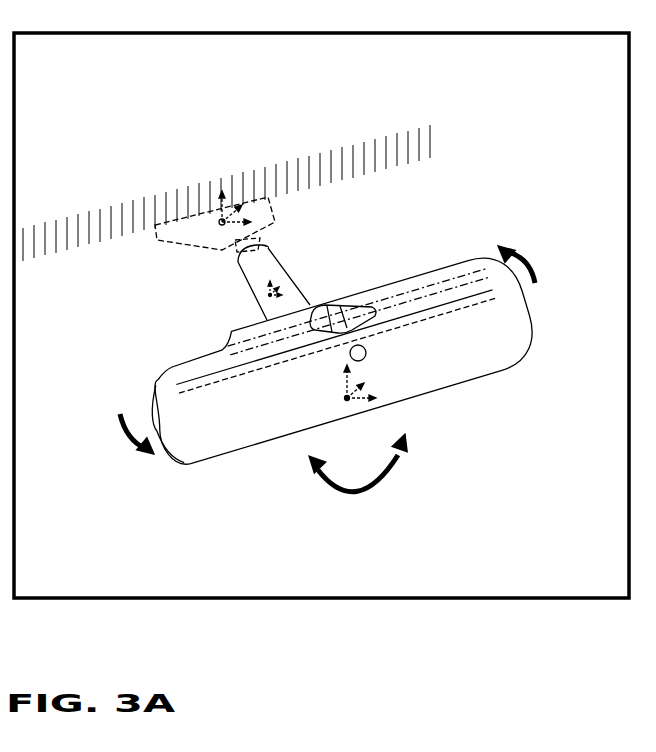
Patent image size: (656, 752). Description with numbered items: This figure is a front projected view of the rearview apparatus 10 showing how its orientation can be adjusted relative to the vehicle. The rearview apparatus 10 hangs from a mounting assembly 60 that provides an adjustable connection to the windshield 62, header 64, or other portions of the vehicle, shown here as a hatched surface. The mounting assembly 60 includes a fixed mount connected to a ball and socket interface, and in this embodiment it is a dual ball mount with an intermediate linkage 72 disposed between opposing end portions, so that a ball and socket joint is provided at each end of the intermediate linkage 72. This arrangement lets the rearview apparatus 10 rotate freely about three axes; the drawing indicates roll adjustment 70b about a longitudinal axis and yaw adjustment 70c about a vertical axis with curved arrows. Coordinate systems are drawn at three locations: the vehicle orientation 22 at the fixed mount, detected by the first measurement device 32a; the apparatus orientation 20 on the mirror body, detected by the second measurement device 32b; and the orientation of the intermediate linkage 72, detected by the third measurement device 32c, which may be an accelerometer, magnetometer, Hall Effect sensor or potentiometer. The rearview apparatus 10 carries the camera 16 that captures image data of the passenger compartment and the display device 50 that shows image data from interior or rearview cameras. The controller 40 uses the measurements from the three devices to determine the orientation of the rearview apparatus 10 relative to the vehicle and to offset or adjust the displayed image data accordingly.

The rearview apparatus 10 is at (358, 328).
The camera 16 is at (367, 349).
The apparatus orientation 20 is at (269, 443).
The vehicle orientation 22 is at (172, 202).
The first measurement device 32a is at (222, 222).
The second measurement device 32b is at (346, 398).
The third measurement device 32c is at (269, 296).
The controller 40 is at (412, 371).
The display device 50 is at (475, 345).
The mounting assembly 60 is at (251, 277).
The windshield 62 is at (226, 173).
The header 64 is at (296, 163).
The roll adjustment 70b is at (380, 494).
The yaw adjustment 70c is at (115, 445).
The intermediate linkage 72 is at (242, 270).